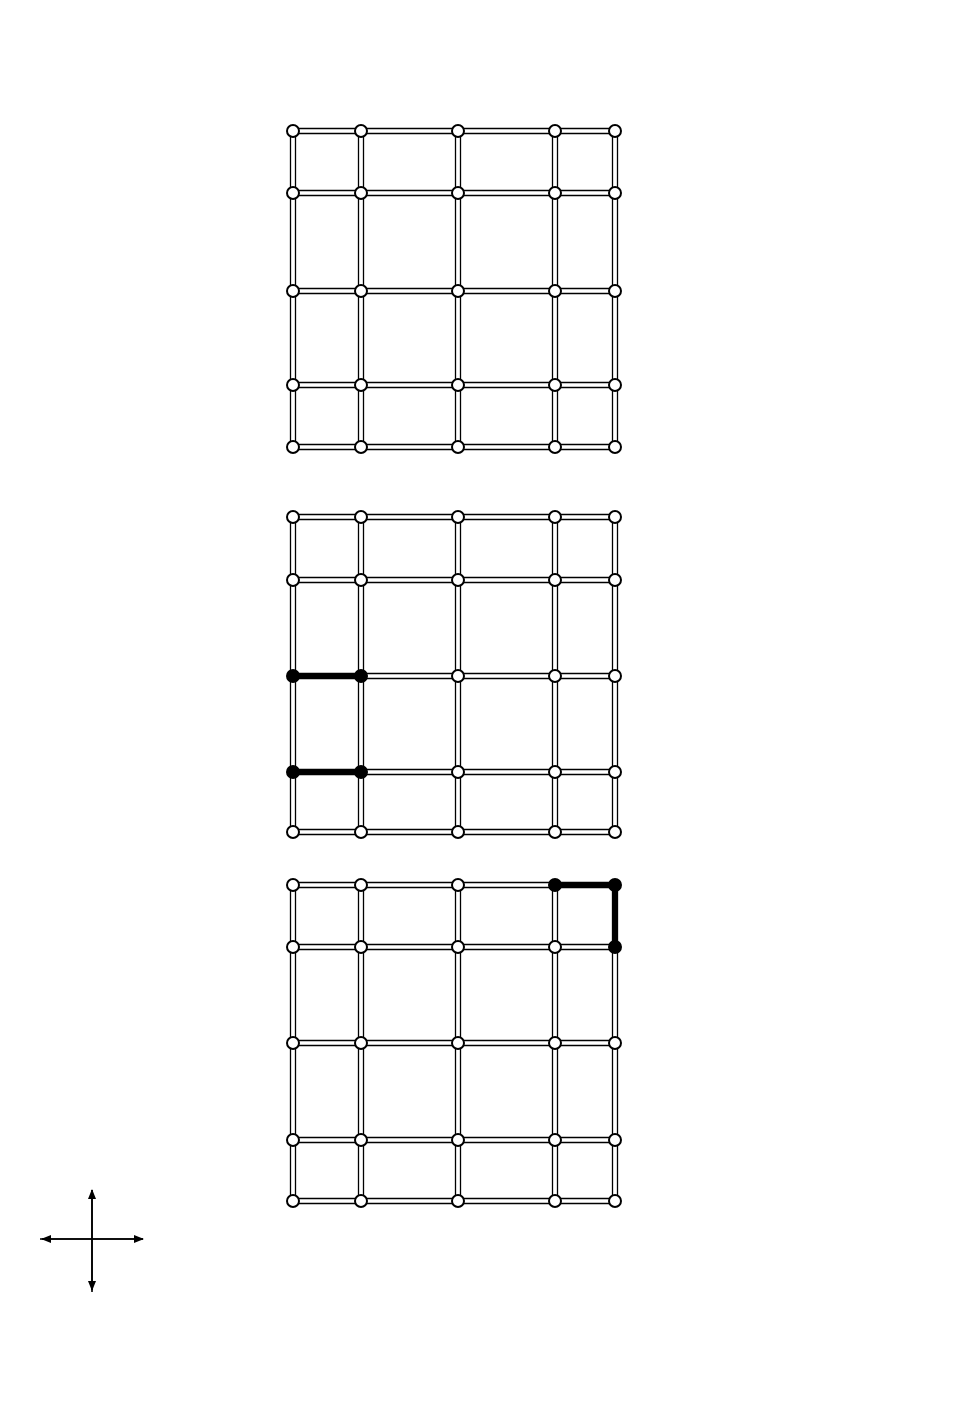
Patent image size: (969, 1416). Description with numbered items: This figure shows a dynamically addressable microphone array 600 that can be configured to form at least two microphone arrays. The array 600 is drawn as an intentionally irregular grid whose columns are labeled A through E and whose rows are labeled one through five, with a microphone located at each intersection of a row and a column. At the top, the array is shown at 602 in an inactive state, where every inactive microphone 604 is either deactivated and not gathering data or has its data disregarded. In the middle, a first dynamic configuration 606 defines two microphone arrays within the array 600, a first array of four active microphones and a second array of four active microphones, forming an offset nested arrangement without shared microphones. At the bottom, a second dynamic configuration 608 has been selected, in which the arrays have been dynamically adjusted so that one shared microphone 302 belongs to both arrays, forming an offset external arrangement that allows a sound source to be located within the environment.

The dynamically addressable microphone array 600 is at (753, 38).
The inactive state 602 is at (283, 96).
The inactive microphone 604 is at (617, 383).
The first dynamic configuration 606 is at (253, 483).
The second dynamic configuration 608 is at (258, 870).
The shared microphone 302 is at (559, 951).